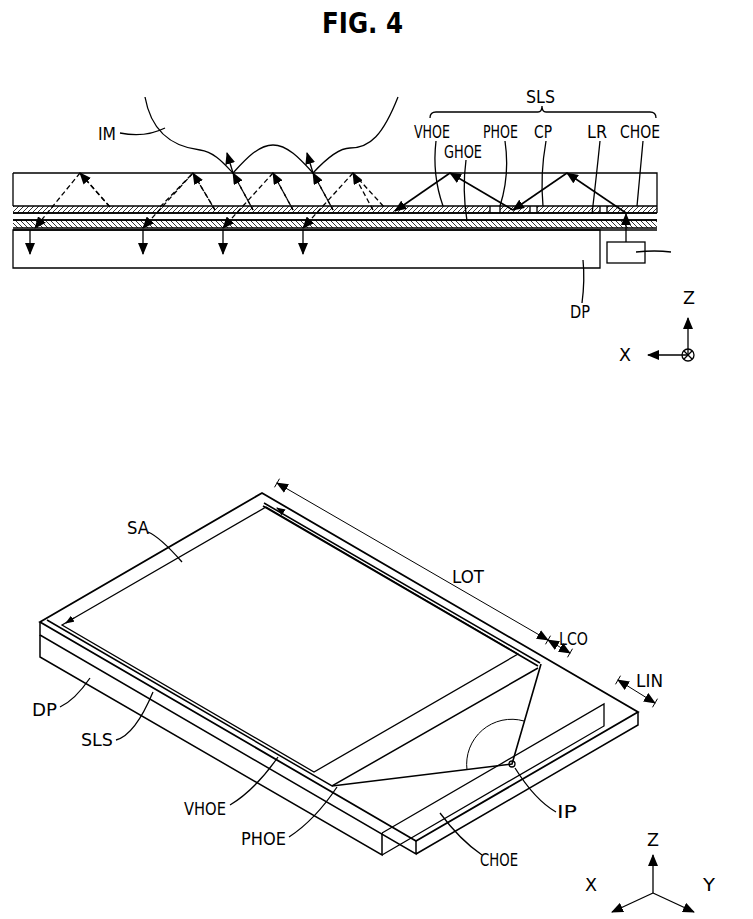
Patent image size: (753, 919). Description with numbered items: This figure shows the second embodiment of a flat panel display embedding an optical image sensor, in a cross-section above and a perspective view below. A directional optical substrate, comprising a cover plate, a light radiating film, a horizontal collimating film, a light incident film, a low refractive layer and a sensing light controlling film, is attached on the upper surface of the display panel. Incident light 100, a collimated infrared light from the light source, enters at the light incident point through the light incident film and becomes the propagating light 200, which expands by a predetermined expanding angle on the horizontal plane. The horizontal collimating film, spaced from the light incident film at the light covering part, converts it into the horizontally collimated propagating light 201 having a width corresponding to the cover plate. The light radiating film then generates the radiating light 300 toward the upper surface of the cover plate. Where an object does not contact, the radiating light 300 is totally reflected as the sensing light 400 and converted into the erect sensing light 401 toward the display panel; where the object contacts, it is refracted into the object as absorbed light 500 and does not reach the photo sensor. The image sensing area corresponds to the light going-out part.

The incident light 100 is at (607, 250).
The propagating light 200 is at (547, 226).
The horizontally collimated propagating light 201 is at (421, 184).
The radiating light 300 is at (98, 195).
The sensing light 400 is at (72, 181).
The erect sensing light 401 is at (40, 241).
The absorbed light 500 is at (217, 181).